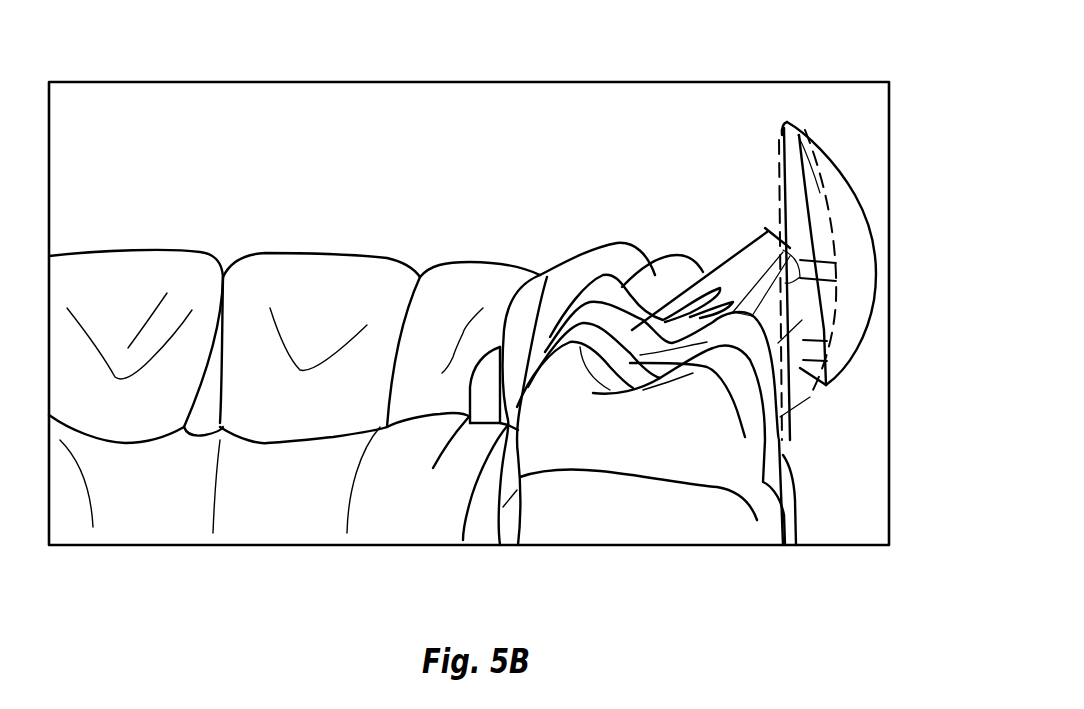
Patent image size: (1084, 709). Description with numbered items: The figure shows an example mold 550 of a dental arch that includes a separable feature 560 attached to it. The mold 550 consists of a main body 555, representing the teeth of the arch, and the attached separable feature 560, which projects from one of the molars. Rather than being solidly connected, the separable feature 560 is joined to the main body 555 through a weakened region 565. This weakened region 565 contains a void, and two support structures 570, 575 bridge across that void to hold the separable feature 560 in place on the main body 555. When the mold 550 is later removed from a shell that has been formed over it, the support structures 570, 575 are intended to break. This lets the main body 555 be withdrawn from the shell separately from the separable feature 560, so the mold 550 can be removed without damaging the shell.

The mold 550 is at (876, 72).
The main body 555 is at (790, 513).
The separable feature 560 is at (843, 363).
The weakened region 565 is at (837, 225).
The support structure 570 is at (837, 272).
The support structure 575 is at (850, 327).